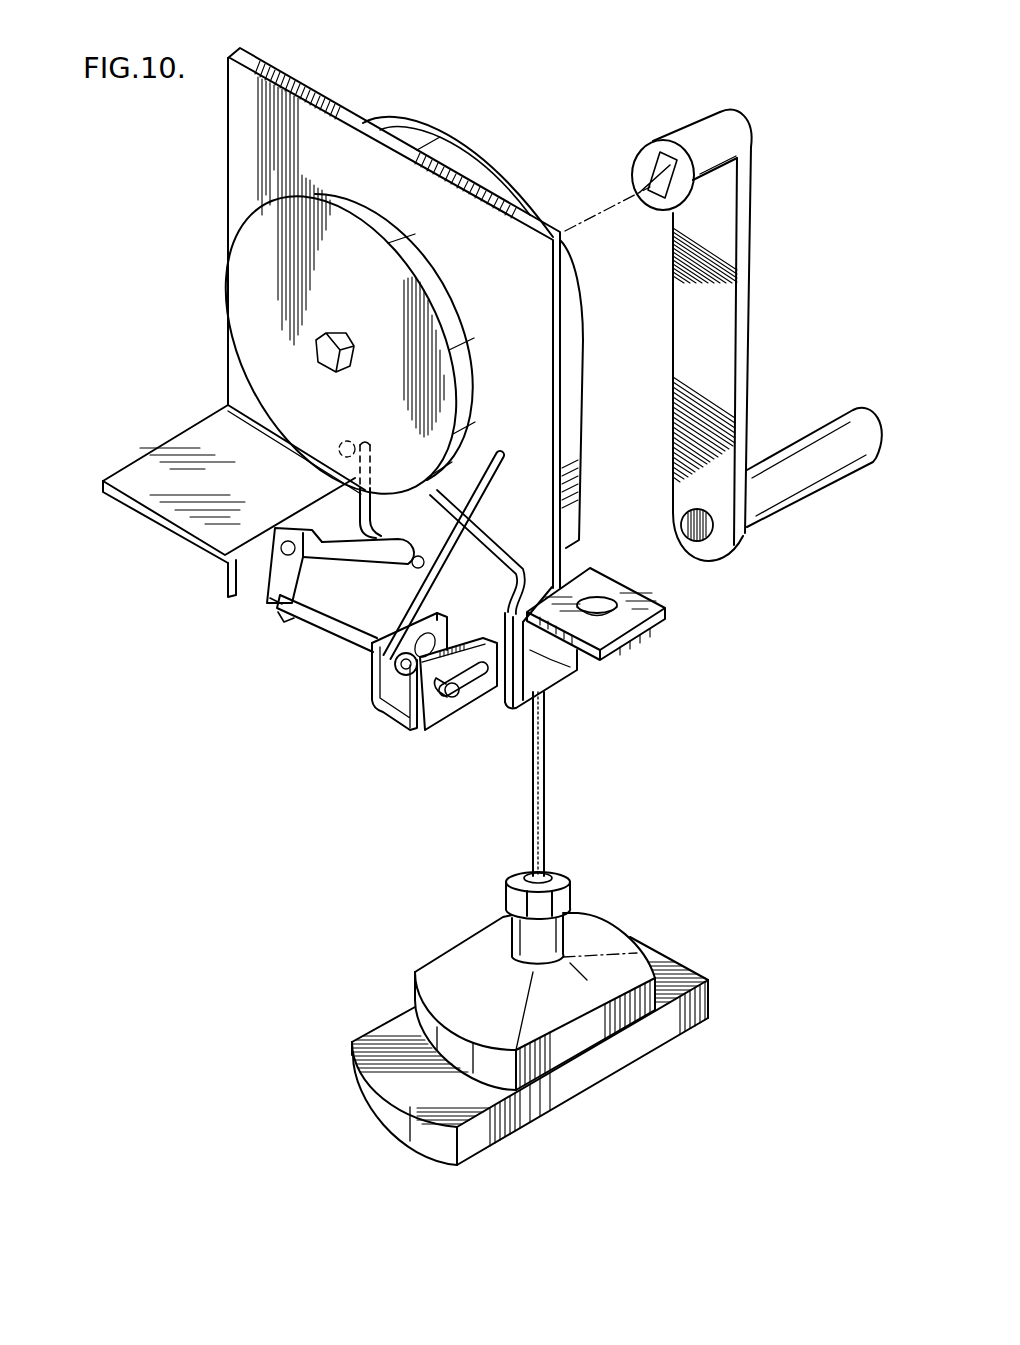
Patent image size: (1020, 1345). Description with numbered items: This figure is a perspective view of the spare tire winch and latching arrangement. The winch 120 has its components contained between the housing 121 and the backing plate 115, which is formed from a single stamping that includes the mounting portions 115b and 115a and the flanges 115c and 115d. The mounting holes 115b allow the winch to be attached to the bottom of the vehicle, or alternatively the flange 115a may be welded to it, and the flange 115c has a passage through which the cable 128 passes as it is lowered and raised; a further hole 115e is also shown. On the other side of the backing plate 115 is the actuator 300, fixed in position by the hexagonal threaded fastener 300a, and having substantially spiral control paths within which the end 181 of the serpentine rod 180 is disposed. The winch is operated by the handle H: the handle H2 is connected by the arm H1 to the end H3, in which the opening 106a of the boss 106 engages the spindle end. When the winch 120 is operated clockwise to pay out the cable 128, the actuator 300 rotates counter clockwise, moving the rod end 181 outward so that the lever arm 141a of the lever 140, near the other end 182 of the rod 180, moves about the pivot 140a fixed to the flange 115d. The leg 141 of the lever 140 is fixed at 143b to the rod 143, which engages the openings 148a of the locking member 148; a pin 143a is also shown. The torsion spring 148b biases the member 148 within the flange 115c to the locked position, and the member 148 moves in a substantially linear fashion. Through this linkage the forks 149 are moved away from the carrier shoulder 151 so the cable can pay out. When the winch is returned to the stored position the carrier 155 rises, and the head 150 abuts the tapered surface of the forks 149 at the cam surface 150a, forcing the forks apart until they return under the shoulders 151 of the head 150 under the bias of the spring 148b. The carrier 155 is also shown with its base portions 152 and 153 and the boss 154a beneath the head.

The backing plate 115 is at (246, 122).
The flange 115a is at (140, 470).
The mounting holes 115b is at (665, 597).
The flange 115c is at (512, 712).
The flange 115d is at (237, 580).
The hole 115e is at (600, 596).
The winch 120 is at (393, 108).
The housing 121 is at (460, 142).
The cable 128 is at (548, 720).
The lever 140 is at (347, 552).
The pivot 140a is at (247, 572).
The leg 141 is at (272, 612).
The lever arm 141a is at (403, 528).
The rod 143 is at (305, 628).
The pin 143a is at (433, 716).
The fixing point 143b is at (275, 633).
The locking member 148 is at (460, 735).
The openings 148a is at (438, 728).
The torsion spring 148b is at (388, 673).
The forks 149 is at (548, 670).
The head 150 is at (572, 885).
The cam surface 150a is at (560, 878).
The shoulder 151 is at (568, 916).
The upper base block 152 is at (630, 960).
The lower base block 153 is at (398, 1078).
The cylindrical boss 154a is at (518, 936).
The carrier 155 is at (370, 996).
The serpentine rod 180 is at (332, 490).
The rod end 181 is at (350, 446).
The other end of rod 182 is at (362, 652).
The actuator 300 is at (242, 258).
The hexagonal threaded fastener 300a is at (318, 352).
The boss 106 is at (683, 117).
The opening 106a is at (655, 163).
The handle H is at (745, 313).
The arm H1 is at (745, 400).
The handle H2 is at (820, 488).
The end H3 is at (705, 140).